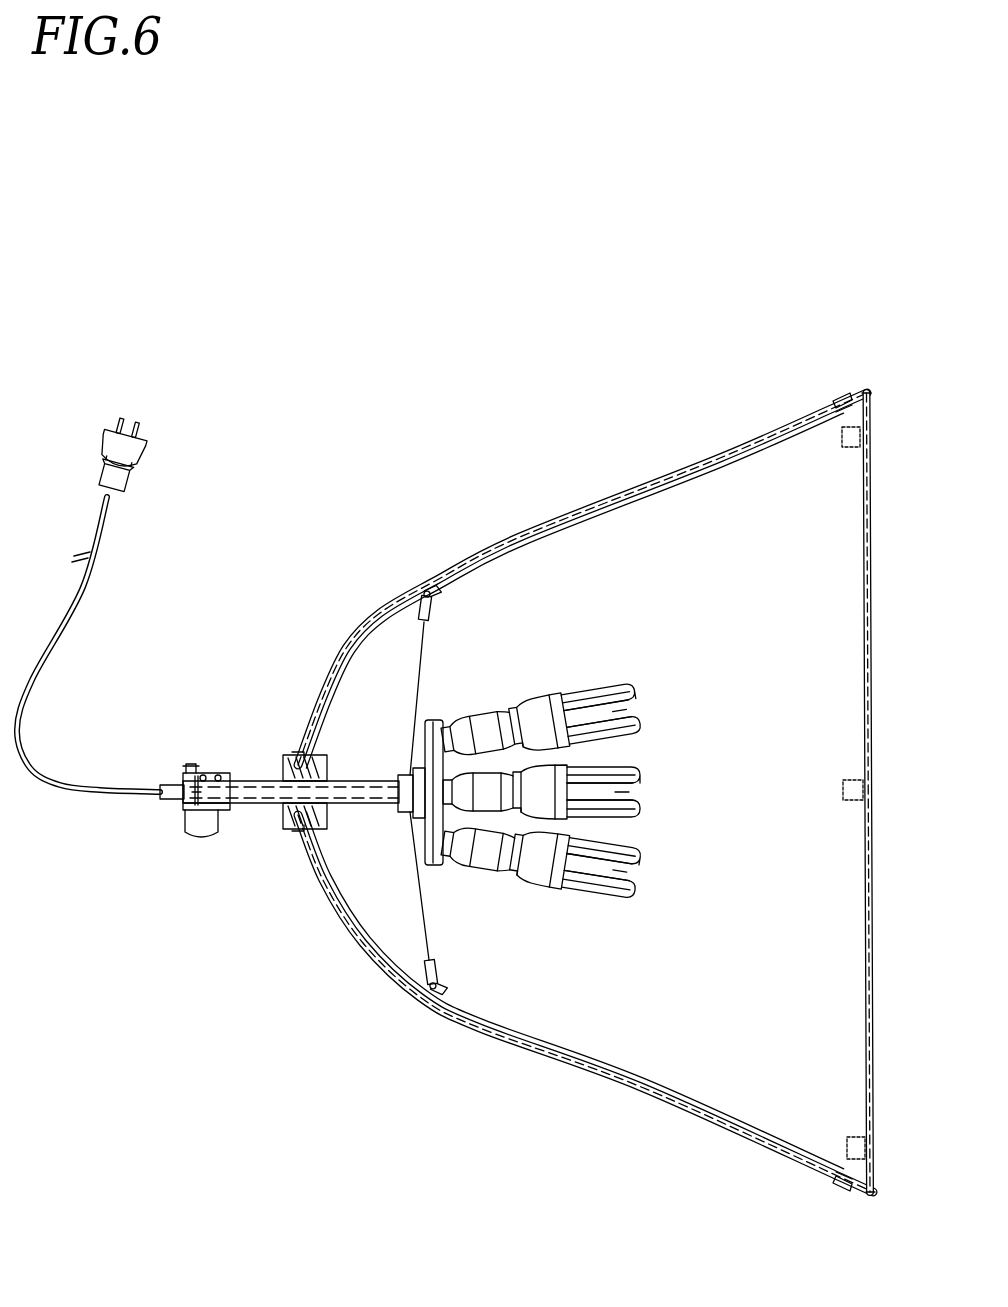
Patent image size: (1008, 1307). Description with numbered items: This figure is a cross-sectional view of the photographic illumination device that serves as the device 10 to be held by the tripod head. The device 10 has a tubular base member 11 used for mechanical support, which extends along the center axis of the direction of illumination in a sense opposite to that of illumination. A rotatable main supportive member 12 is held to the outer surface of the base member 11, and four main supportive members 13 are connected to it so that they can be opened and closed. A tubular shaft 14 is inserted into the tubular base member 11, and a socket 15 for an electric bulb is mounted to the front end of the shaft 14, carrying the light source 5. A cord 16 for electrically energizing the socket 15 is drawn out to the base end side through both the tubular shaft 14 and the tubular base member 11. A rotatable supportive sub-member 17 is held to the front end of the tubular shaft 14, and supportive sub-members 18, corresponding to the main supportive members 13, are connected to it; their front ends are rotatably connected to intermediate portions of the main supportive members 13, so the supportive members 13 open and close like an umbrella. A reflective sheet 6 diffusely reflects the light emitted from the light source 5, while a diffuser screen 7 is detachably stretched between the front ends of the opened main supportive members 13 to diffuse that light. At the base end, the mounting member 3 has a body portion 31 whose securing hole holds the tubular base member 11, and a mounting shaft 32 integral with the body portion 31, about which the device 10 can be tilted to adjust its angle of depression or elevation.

The mounting member 3 is at (202, 734).
The light source 5 is at (641, 787).
The reflective sheet 6 is at (750, 440).
The diffuser screen 7 is at (870, 630).
The device to be held 10 is at (560, 471).
The tubular base member 11 is at (268, 796).
The rotatable main supportive member 12 is at (325, 811).
The main supportive members 13 is at (690, 495).
The tubular shaft 14 is at (168, 800).
The socket 15 is at (503, 886).
The cord 16 is at (60, 646).
The rotatable supportive sub-member 17 is at (406, 790).
The supportive sub-members 18 is at (426, 644).
The body portion 31 is at (222, 775).
The mounting shaft 32 is at (205, 830).